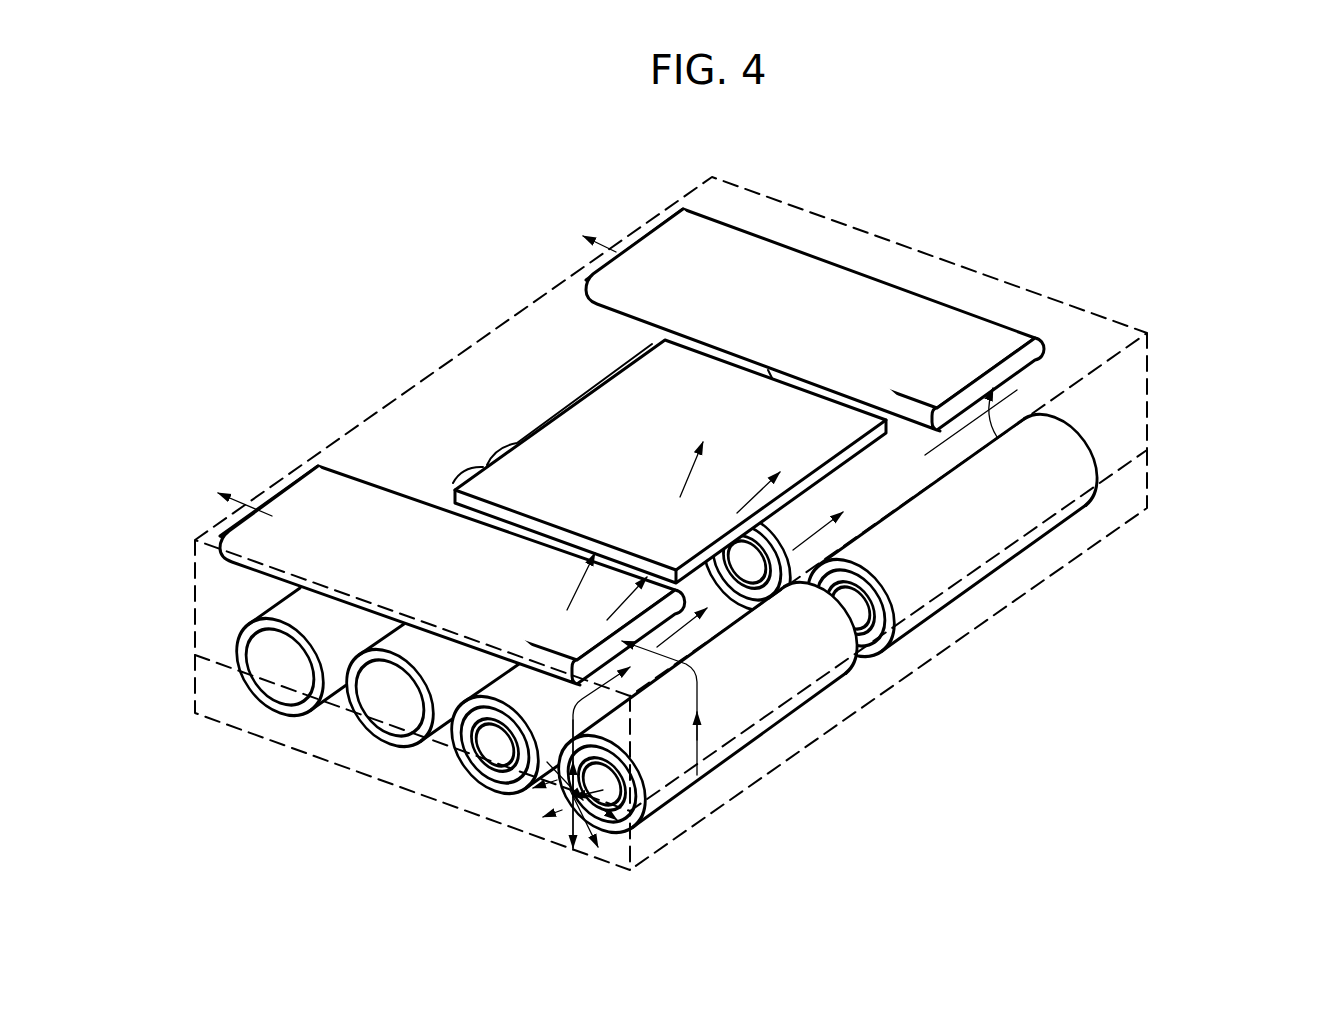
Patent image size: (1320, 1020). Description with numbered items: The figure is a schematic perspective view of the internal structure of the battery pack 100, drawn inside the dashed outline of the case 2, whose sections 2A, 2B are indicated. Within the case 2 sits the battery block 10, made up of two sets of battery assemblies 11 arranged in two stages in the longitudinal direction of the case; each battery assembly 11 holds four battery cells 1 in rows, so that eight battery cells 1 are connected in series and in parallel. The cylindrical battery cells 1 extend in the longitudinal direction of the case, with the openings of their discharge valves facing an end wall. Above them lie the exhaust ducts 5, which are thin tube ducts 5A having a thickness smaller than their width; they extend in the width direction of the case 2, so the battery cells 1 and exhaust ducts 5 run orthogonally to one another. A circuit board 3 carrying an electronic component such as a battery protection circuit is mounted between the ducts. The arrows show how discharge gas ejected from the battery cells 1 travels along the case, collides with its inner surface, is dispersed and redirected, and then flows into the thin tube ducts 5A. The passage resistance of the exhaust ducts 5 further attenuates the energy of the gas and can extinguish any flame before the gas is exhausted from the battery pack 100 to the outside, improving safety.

The battery pack 100 is at (259, 267).
The battery cell 1 is at (281, 676).
The case 2 is at (747, 523).
The upper casing 2A is at (1042, 243).
The lower casing 2B is at (722, 594).
The circuit board 3 is at (668, 474).
The exhaust duct 5 is at (632, 407).
The thin tube duct 5A is at (830, 300).
The battery block 10 is at (878, 674).
The battery assembly 11 is at (1024, 578).